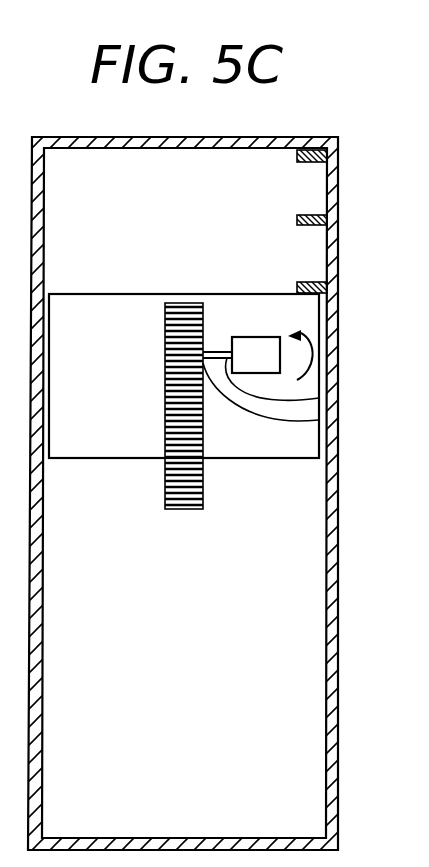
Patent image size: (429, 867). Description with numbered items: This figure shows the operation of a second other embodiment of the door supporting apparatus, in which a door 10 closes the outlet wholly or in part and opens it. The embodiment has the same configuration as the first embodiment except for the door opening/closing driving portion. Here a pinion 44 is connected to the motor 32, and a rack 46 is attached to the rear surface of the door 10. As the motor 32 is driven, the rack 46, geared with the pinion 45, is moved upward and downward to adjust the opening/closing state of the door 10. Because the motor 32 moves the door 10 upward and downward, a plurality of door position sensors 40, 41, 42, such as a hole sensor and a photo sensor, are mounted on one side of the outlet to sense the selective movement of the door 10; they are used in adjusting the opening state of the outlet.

The door 10 is at (270, 452).
The motor 32 is at (262, 348).
The door position sensor 40 is at (327, 153).
The door position sensor 41 is at (327, 218).
The door position sensor 42 is at (327, 287).
The pinion 44 is at (319, 398).
The pinion 45 is at (319, 420).
The rack 46 is at (203, 320).